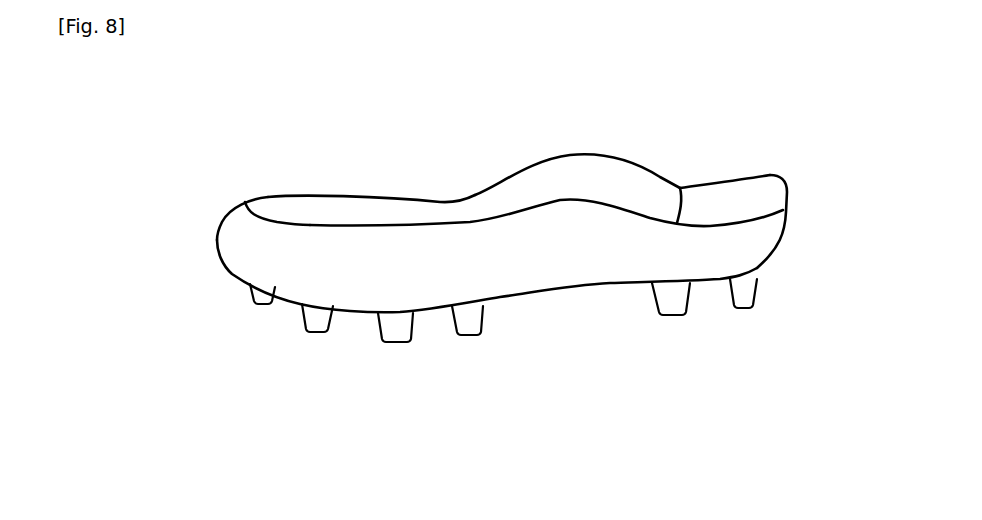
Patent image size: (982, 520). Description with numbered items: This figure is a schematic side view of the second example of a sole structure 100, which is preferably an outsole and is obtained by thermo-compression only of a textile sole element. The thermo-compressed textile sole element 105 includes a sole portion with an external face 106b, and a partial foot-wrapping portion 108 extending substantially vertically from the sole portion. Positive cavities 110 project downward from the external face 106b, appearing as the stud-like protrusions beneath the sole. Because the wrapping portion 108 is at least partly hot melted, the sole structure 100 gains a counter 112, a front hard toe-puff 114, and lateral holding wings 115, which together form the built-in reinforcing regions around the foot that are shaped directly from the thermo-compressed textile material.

The sole structure 100 is at (152, 196).
The thermo-compressed textile sole element 105 is at (785, 203).
The external face 106b is at (515, 297).
The partial foot-wrapping portion 108 is at (682, 218).
The positive cavities 110 is at (468, 337).
The counter 112 is at (783, 233).
The front hard toe-puff 114 is at (245, 243).
The lateral holding wings 115 is at (585, 202).